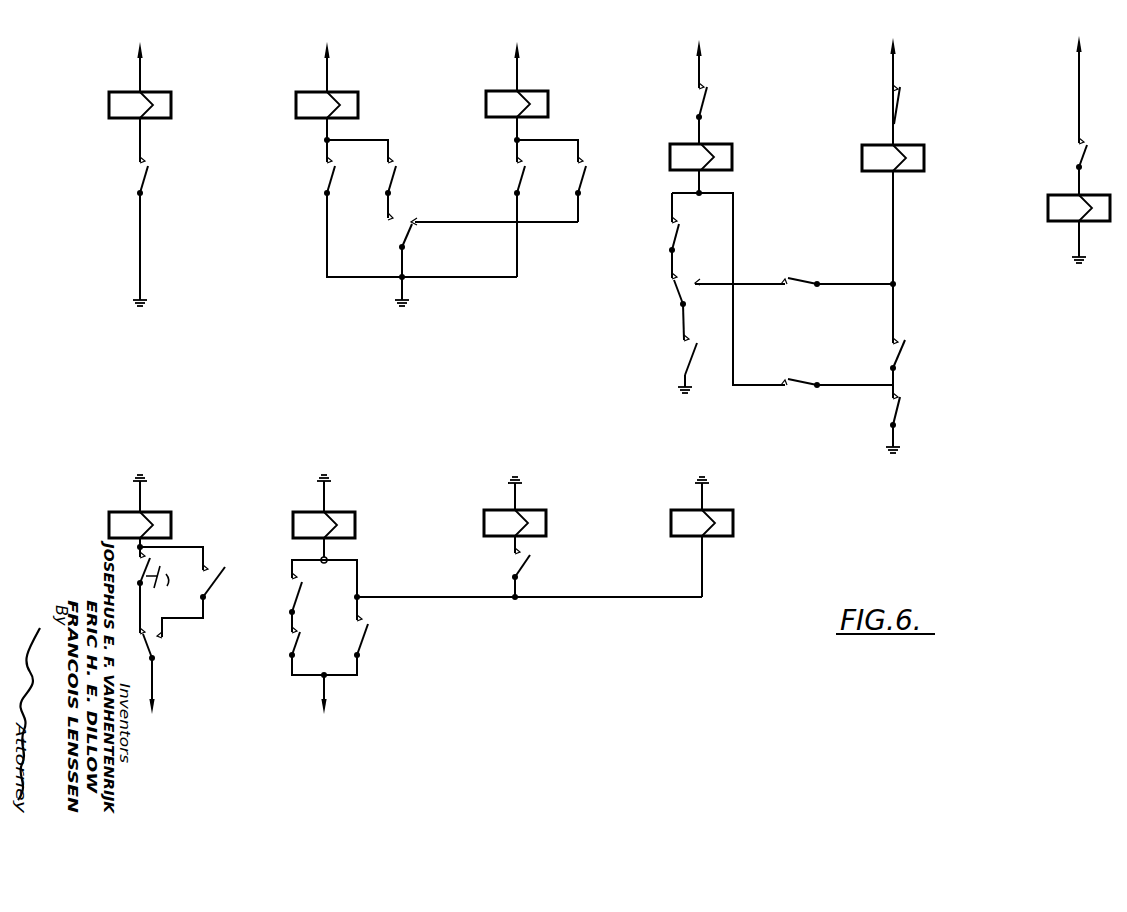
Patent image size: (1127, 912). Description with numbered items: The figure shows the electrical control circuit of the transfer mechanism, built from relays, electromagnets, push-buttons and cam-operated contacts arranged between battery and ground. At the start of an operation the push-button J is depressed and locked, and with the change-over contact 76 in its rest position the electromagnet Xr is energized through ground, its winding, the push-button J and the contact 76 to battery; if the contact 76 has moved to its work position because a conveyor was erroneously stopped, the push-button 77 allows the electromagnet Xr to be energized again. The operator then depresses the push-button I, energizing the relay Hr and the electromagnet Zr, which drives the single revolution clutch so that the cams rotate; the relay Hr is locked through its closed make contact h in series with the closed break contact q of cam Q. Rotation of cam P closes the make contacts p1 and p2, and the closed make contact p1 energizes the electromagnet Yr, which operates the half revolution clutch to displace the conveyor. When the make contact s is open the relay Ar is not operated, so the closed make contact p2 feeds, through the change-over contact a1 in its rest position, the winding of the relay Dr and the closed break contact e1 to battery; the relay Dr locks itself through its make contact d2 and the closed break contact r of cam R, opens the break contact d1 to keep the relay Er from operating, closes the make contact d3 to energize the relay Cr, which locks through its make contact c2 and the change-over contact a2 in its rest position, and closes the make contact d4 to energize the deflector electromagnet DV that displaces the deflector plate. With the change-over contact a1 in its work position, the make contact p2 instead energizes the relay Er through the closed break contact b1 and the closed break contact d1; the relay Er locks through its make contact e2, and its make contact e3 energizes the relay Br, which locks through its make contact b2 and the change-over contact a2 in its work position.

The deflector electromagnet DV is at (124, 102).
The make contact d4 is at (128, 231).
The relay Br is at (325, 102).
The make contact e3 is at (402, 208).
The make contact b2 is at (373, 188).
The change-over contact a2 is at (467, 262).
The relay Cr is at (514, 102).
The make contact d3 is at (501, 208).
The make contact c2 is at (597, 189).
The break contact e1 is at (671, 159).
The relay Dr is at (712, 264).
The change-over contact a1 is at (710, 306).
The make contact p2 is at (673, 364).
The break contact b1 is at (838, 269).
The make contact d2 is at (837, 369).
The break contact d1 is at (876, 91).
The relay Er is at (876, 244).
The make contact e2 is at (913, 368).
The break contact r is at (899, 423).
The make contact s is at (1089, 103).
The relay Ar is at (1059, 215).
The electromagnet Xr is at (140, 522).
The push-button J is at (139, 592).
The push-button 77 is at (203, 598).
The change-over contact 76 is at (129, 671).
The relay Hr is at (480, 594).
The make contact h is at (285, 602).
The break contact q is at (284, 644).
The push-button I is at (370, 638).
The electromagnet Yr is at (498, 515).
The make contact p1 is at (505, 574).
The electromagnet Zr is at (686, 537).